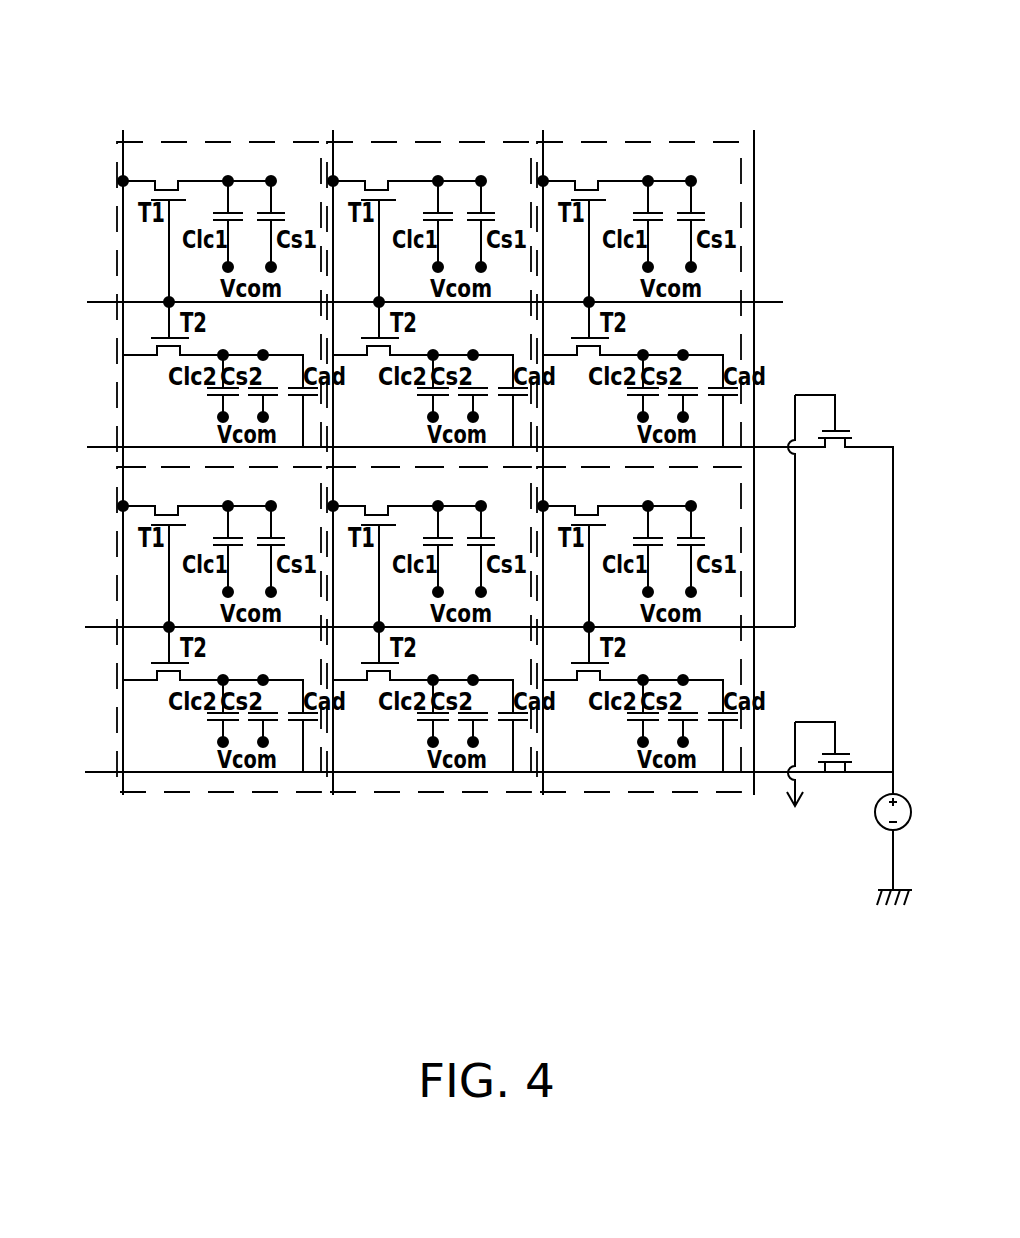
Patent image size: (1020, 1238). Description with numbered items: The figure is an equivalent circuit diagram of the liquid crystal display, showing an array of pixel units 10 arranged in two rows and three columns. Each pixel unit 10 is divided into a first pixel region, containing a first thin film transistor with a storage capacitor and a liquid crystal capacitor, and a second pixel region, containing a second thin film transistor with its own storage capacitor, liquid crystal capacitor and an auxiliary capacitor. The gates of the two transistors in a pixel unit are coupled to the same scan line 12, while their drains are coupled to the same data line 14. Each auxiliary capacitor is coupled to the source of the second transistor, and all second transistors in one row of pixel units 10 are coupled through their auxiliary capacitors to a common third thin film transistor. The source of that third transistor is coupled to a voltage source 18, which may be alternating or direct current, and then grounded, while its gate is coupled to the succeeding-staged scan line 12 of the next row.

The pixel unit 10 is at (441, 398).
The scan line 12 is at (117, 302).
The data line 14 is at (120, 420).
The voltage source 18 is at (875, 813).